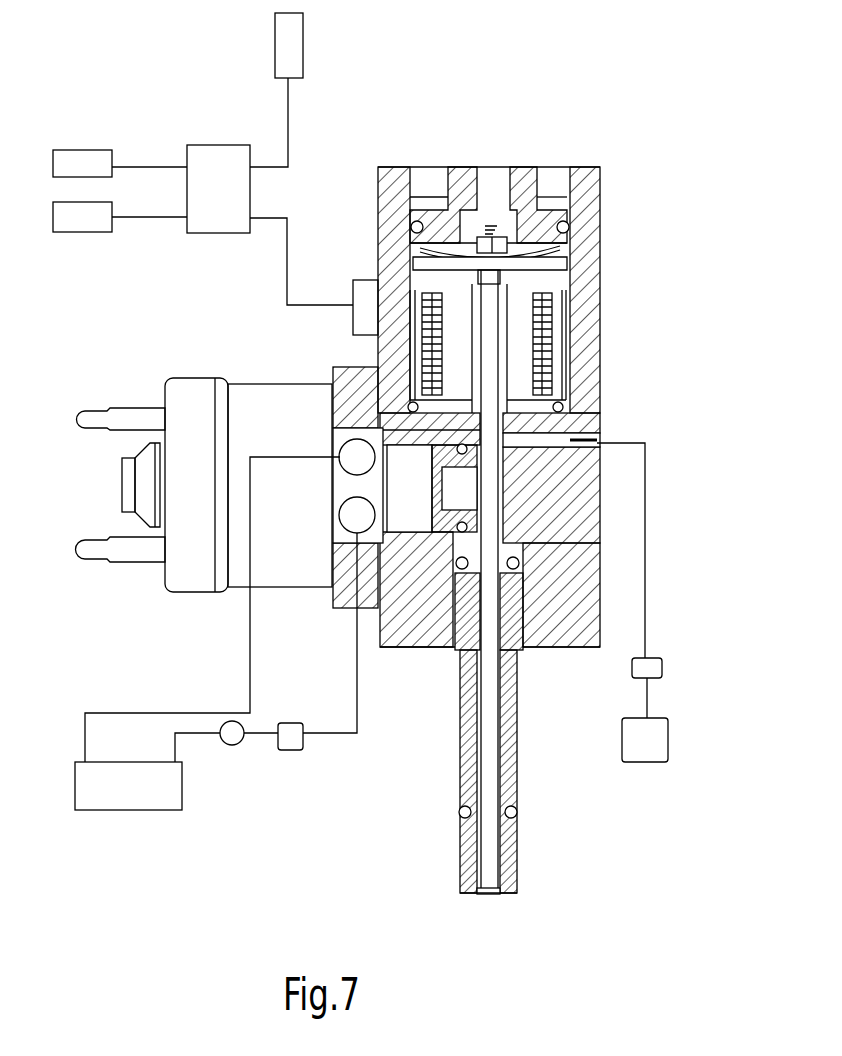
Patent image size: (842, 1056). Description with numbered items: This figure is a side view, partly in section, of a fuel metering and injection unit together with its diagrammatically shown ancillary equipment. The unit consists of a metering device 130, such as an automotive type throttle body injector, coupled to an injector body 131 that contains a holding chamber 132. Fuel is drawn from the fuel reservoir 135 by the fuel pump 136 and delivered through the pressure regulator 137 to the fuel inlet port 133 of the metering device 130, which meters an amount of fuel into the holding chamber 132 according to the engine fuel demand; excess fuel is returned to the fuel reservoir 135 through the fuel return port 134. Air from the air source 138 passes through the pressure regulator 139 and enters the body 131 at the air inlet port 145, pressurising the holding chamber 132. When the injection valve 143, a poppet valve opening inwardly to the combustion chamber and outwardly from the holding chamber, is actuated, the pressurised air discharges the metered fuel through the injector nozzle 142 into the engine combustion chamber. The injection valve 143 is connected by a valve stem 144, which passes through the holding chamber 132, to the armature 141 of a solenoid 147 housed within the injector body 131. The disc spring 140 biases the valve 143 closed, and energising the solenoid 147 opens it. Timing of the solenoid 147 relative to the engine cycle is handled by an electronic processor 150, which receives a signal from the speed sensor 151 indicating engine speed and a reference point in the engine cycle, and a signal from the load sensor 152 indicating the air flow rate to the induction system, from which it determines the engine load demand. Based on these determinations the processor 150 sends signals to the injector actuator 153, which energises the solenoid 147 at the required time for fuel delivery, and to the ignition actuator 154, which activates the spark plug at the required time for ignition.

The metering device 130 is at (265, 390).
The injector body 131 is at (584, 552).
The holding chamber 132 is at (450, 492).
The fuel inlet port 133 is at (345, 516).
The fuel return port 134 is at (342, 452).
The fuel reservoir 135 is at (110, 805).
The fuel pump 136 is at (232, 745).
The pressure regulator 137 is at (285, 750).
The air source 138 is at (643, 760).
The pressure regulator 139 is at (648, 670).
The disc spring 140 is at (578, 240).
The armature 141 is at (565, 270).
The injector nozzle 142 is at (465, 895).
The injection valve 143 is at (508, 890).
The valve stem 144 is at (492, 757).
The air inlet port 145 is at (593, 443).
The solenoid 147 is at (513, 365).
The electronic processor 150 is at (215, 157).
The speed sensor 151 is at (85, 223).
The load sensor 152 is at (85, 160).
The injector actuator 153 is at (358, 293).
The ignition actuator 154 is at (298, 53).